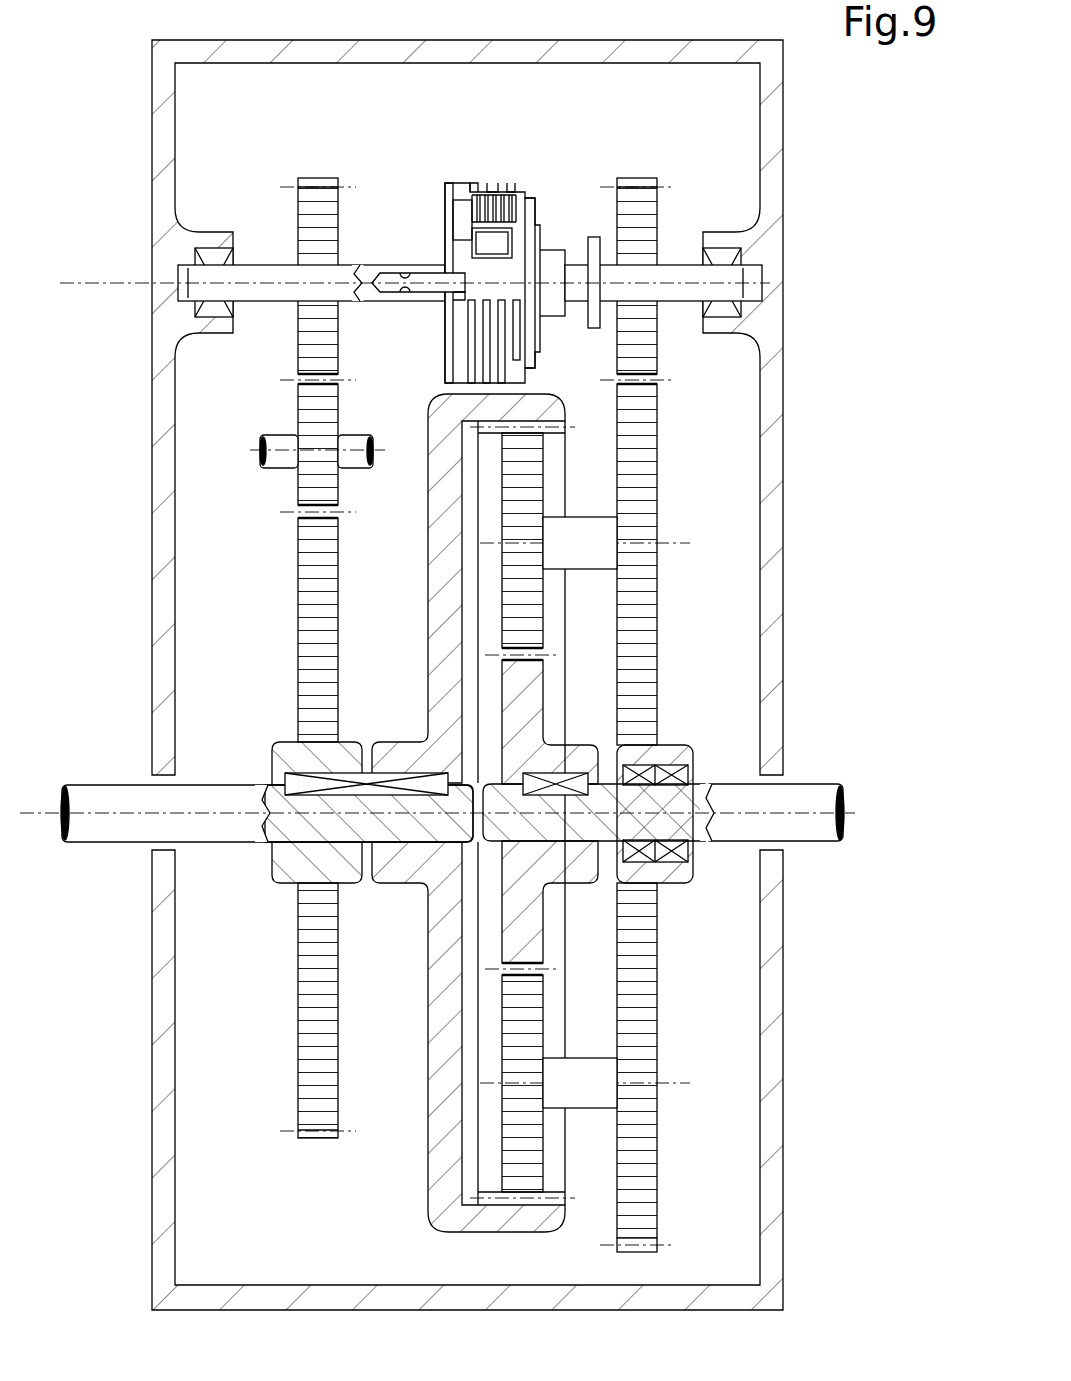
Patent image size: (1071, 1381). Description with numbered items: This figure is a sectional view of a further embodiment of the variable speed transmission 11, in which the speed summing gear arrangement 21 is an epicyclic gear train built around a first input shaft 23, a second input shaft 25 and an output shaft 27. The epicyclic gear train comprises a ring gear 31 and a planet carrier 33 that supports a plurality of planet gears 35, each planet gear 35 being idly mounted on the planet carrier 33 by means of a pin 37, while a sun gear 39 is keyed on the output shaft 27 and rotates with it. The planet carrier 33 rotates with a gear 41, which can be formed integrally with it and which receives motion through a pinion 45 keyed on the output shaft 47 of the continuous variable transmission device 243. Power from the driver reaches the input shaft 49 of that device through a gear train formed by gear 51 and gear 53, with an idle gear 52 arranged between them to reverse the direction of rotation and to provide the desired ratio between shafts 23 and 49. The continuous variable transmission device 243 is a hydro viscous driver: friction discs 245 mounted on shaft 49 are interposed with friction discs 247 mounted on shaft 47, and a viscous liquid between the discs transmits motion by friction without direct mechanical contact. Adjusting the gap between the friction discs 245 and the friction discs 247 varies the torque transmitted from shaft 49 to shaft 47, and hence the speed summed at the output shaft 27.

The variable speed transmission 11 is at (840, 322).
The speed summing gear arrangement 21 is at (705, 458).
The first input shaft 23 is at (93, 797).
The second input shaft 25 is at (667, 758).
The output shaft 27 is at (812, 800).
The ring gear 31 is at (440, 527).
The planet carrier 33 is at (643, 1018).
The planet gear 35 is at (530, 470).
The pin 37 is at (577, 545).
The sun gear 39 is at (548, 928).
The gear 41 is at (634, 1242).
The pinion 45 is at (647, 203).
The output shaft of the continuous variable transmission device 47 is at (683, 295).
The input shaft of the continuous variable transmission device 49 is at (267, 290).
The gear 51 is at (303, 203).
The idle gear 52 is at (310, 410).
The gear 53 is at (315, 605).
The continuous variable transmission device 243 is at (530, 180).
The friction discs 245 is at (487, 184).
The friction discs 247 is at (490, 222).